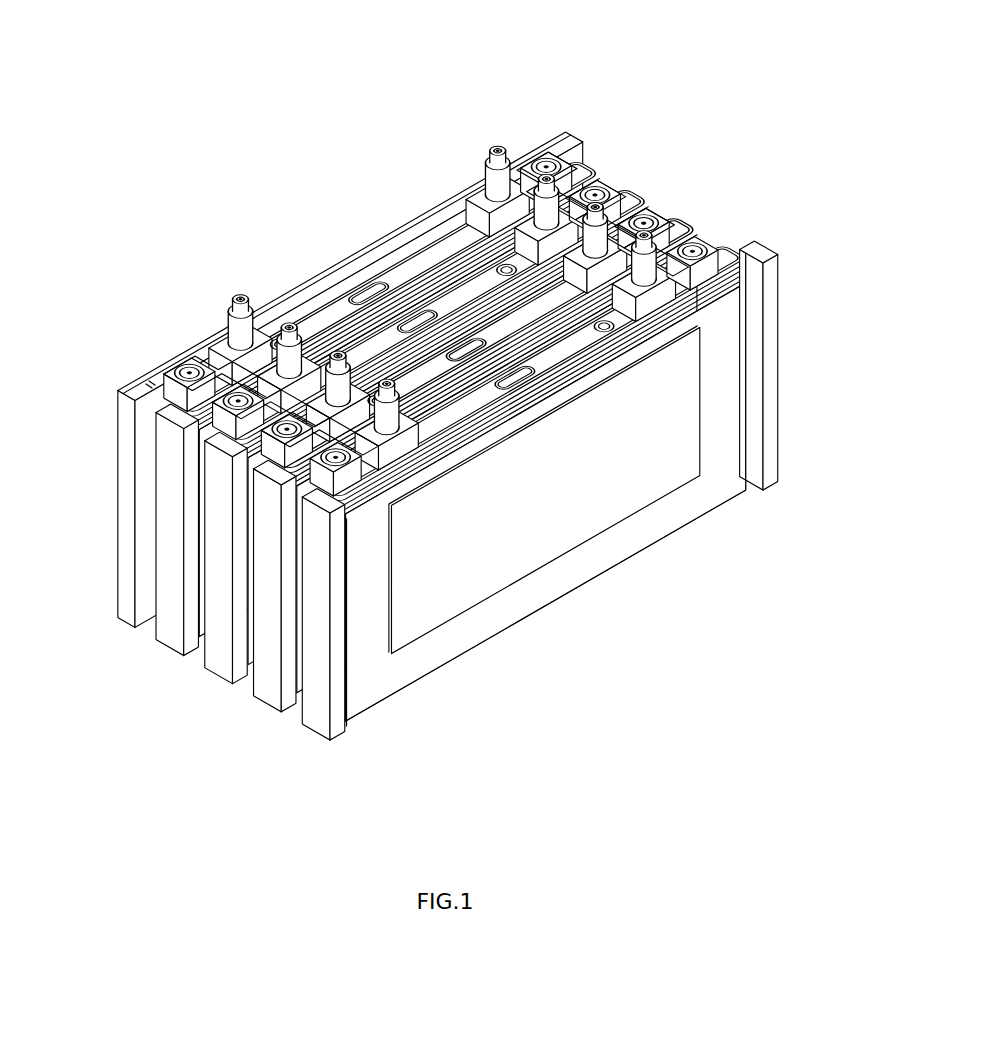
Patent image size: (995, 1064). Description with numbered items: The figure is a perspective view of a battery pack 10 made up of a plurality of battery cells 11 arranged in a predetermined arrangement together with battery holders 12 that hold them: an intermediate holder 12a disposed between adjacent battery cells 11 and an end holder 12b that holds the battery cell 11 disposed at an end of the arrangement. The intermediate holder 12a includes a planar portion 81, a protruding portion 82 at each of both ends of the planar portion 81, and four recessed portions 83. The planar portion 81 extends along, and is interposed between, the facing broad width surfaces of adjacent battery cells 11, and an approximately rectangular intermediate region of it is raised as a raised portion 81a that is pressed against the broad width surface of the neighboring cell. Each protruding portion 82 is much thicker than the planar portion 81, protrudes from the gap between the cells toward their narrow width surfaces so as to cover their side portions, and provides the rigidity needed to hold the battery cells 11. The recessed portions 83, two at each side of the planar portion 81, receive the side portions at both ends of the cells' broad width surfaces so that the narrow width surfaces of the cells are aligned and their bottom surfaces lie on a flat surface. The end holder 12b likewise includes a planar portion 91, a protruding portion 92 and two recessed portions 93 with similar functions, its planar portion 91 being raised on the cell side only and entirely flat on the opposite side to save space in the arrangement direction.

The battery pack 10 is at (449, 414).
The battery cells 11 is at (455, 375).
The bus bar 12 is at (610, 160).
The intermediate holder 12a is at (622, 170).
The end holder 12b is at (580, 139).
The planar portion 81 is at (546, 502).
The raised portion 81a is at (502, 532).
The protruding portion 82 is at (782, 426).
The recessed portions 83 is at (750, 488).
The planar portion 91 is at (341, 262).
The protruding portion 92 is at (308, 379).
The recessed portions 93 is at (150, 386).